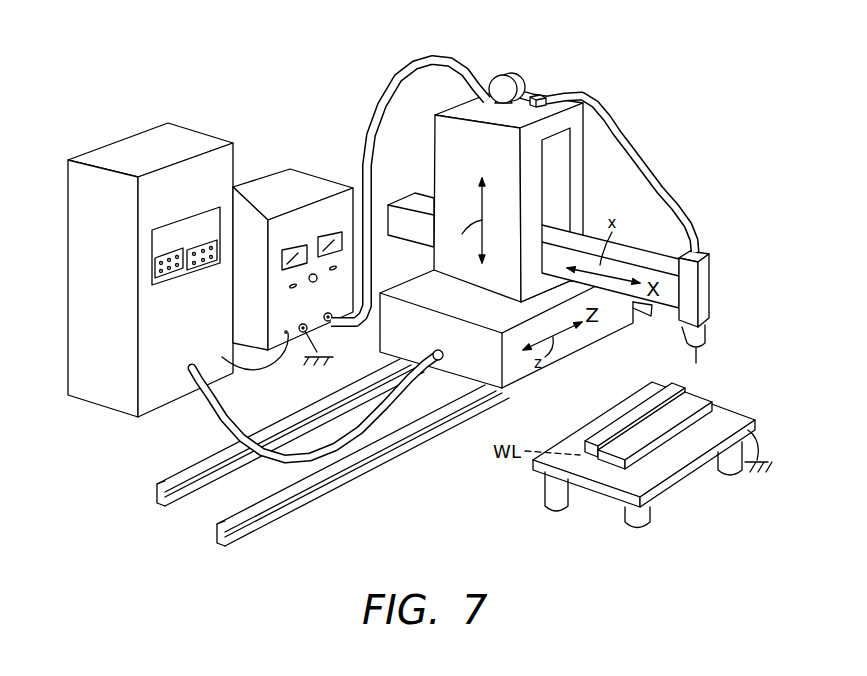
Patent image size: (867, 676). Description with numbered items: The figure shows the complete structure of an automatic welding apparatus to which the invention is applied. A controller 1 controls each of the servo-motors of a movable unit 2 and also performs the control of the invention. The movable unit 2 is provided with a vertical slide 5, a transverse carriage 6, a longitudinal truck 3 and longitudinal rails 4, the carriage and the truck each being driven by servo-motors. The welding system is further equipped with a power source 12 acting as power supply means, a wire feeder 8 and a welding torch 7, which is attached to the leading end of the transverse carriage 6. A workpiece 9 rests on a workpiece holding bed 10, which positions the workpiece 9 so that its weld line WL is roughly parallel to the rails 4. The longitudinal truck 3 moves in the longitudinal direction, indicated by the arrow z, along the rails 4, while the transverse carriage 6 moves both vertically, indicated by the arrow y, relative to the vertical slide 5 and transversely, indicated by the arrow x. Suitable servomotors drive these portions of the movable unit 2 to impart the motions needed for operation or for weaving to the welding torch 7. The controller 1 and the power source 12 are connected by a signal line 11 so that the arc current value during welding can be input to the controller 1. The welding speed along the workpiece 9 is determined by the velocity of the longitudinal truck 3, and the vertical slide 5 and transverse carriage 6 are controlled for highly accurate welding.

The controller 1 is at (193, 150).
The movable unit 2 is at (448, 160).
The longitudinal truck 3 is at (583, 338).
The longitudinal rails 4 is at (300, 497).
The vertical slide 5 is at (580, 172).
The transverse carriage 6 is at (657, 262).
The welding torch 7 is at (705, 291).
The wire feeder 8 is at (519, 80).
The workpiece 9 is at (703, 398).
The workpiece holding bed 10 is at (660, 488).
The signal line 11 is at (270, 378).
The power source 12 is at (302, 183).